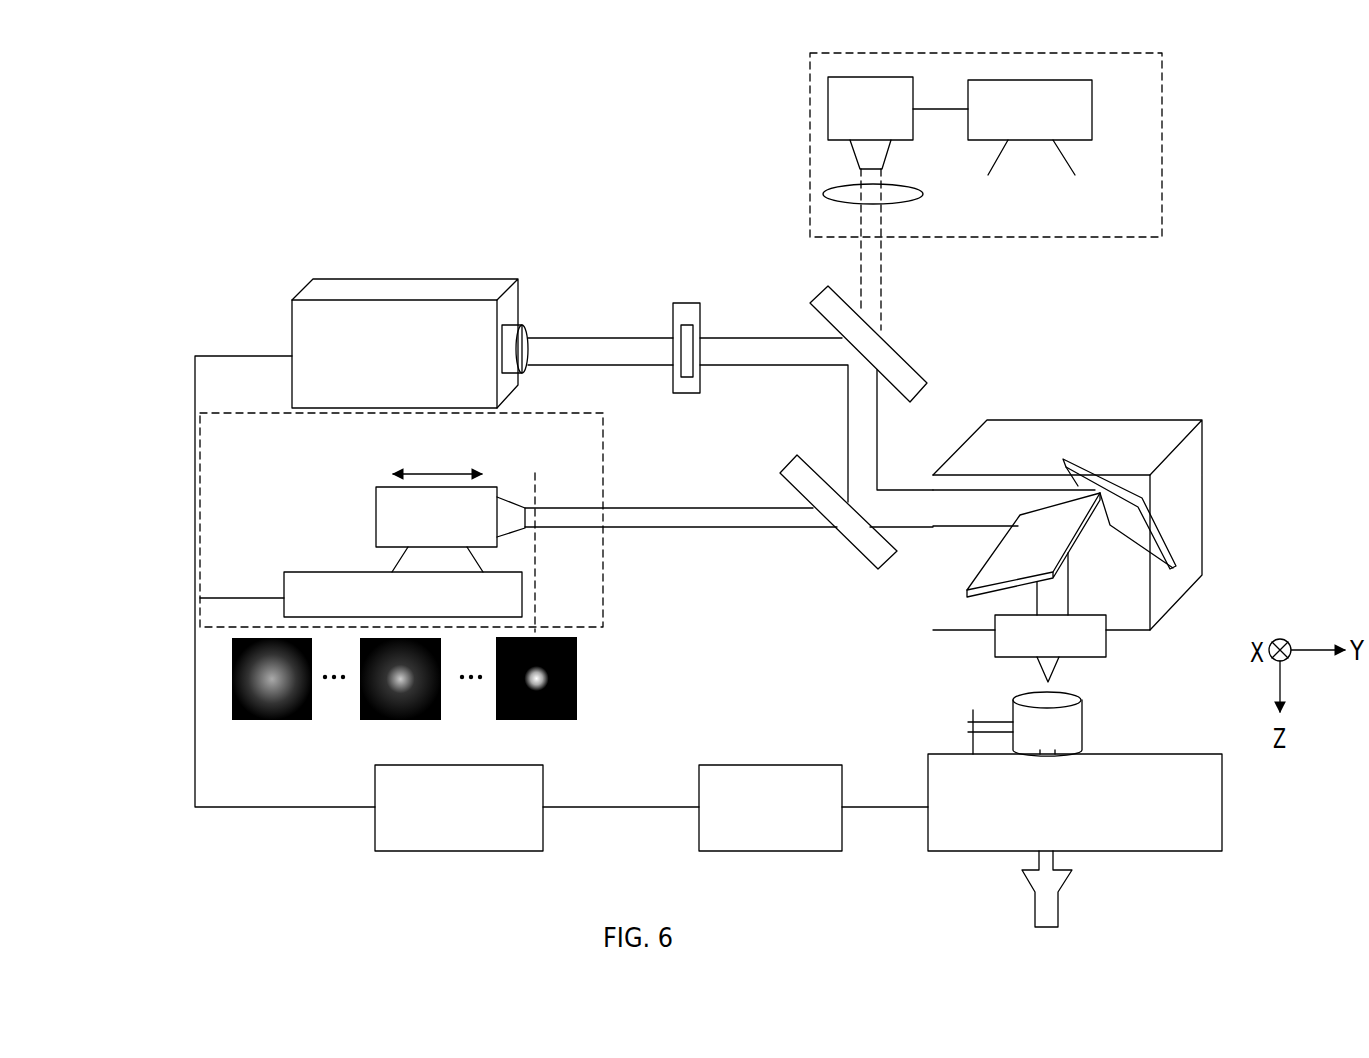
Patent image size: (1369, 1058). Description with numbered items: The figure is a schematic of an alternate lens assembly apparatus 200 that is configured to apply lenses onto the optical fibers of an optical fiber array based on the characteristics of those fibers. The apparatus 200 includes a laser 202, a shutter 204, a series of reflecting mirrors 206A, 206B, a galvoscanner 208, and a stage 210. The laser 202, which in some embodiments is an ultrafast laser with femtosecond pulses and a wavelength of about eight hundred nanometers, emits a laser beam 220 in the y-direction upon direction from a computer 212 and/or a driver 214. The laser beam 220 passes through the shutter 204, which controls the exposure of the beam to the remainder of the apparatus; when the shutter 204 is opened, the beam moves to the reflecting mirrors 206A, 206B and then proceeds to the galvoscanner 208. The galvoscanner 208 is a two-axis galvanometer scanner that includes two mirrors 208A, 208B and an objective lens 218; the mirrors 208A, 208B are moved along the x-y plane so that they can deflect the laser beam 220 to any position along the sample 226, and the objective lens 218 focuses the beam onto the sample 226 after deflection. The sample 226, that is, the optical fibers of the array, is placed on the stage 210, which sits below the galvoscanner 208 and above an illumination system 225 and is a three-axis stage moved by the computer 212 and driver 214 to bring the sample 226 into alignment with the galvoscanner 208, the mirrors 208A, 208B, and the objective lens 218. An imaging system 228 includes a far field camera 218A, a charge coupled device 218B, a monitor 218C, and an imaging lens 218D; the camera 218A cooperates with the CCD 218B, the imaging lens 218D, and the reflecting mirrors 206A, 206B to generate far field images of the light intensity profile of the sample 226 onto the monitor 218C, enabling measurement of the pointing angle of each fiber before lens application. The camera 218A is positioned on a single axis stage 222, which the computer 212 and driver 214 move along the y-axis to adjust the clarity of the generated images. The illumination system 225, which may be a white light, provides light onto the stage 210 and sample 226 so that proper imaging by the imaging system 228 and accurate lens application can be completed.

The lens assembly apparatus 200 is at (185, 153).
The laser 202 is at (305, 317).
The shutter 204 is at (687, 313).
The reflecting mirror 206A is at (895, 350).
The reflecting mirror 206B is at (787, 467).
The galvoscanner 208 is at (1190, 468).
The mirror 208A is at (1025, 525).
The mirror 208B is at (1140, 528).
The stage 210 is at (1207, 830).
The computer 212 is at (453, 837).
The driver 214 is at (747, 835).
The objective lens 218 is at (1100, 647).
The camera 218A is at (387, 500).
The charge coupled device 218B is at (840, 96).
The monitor 218C is at (1092, 105).
The imaging lens 218D is at (912, 196).
The laser beam 220 is at (602, 348).
The single axis stage 222 is at (295, 585).
The illumination system 225 is at (1050, 915).
The sample 226 is at (1070, 727).
The imaging system 228 is at (1162, 72).